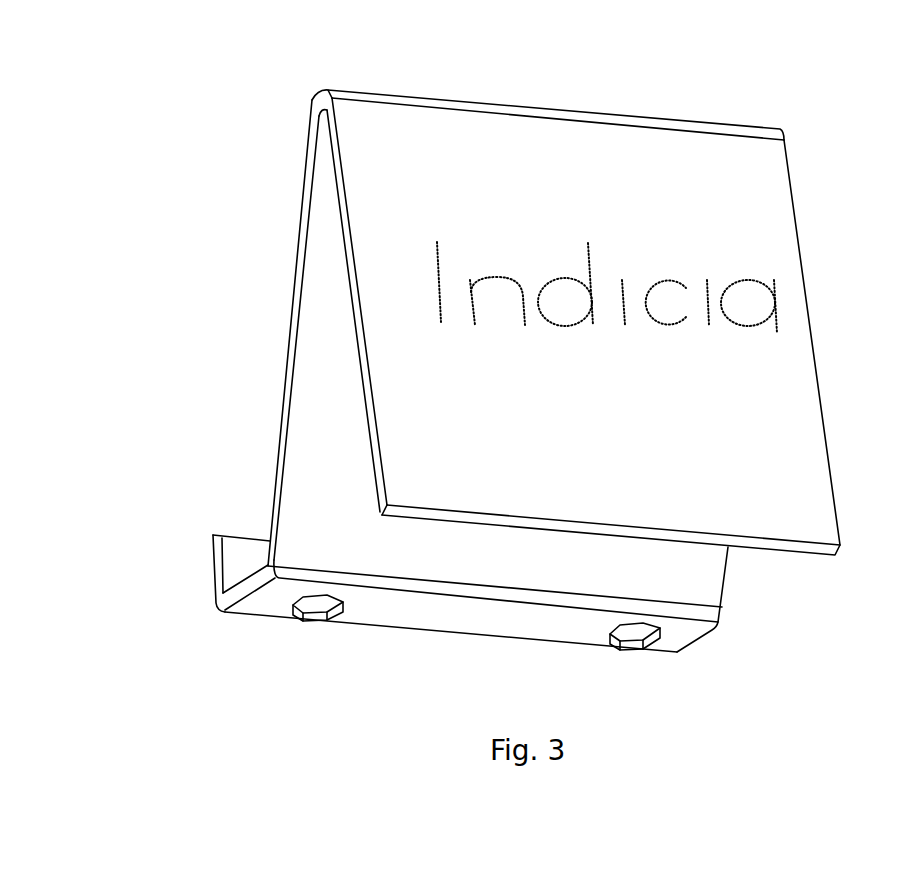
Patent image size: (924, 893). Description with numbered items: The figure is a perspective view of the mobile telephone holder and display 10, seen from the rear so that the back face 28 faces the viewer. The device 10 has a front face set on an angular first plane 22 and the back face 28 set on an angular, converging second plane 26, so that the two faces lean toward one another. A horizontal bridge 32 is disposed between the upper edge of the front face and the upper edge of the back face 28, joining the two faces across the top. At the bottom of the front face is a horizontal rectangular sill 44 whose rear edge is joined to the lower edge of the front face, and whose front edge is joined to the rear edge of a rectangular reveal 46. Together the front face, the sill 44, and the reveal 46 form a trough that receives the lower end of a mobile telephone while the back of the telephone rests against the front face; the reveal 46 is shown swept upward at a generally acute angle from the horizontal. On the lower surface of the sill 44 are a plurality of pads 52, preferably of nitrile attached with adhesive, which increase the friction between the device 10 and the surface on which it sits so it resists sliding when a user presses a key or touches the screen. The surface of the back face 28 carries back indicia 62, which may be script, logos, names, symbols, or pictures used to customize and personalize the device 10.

The mobile telephone holder and display 10 is at (170, 186).
The first plane 22 is at (283, 373).
The second plane 26 is at (626, 301).
The back face 28 is at (766, 477).
The horizontal bridge 32 is at (722, 125).
The horizontal rectangular sill 44 is at (472, 622).
The rectangular reveal 46 is at (222, 588).
The pads 52 is at (307, 622).
The back indicia 62 is at (763, 323).